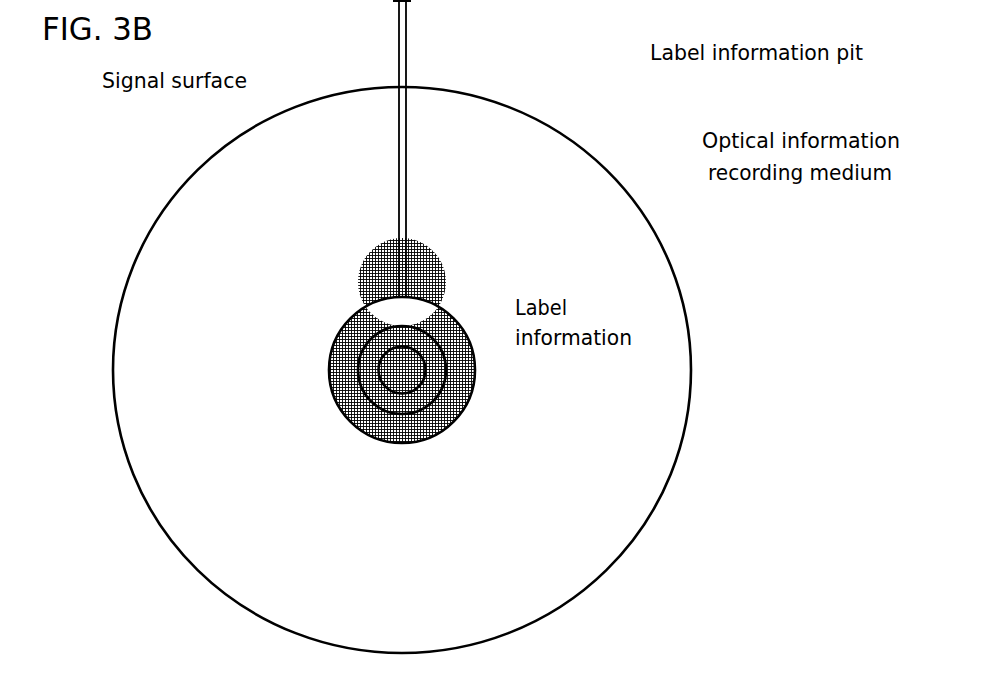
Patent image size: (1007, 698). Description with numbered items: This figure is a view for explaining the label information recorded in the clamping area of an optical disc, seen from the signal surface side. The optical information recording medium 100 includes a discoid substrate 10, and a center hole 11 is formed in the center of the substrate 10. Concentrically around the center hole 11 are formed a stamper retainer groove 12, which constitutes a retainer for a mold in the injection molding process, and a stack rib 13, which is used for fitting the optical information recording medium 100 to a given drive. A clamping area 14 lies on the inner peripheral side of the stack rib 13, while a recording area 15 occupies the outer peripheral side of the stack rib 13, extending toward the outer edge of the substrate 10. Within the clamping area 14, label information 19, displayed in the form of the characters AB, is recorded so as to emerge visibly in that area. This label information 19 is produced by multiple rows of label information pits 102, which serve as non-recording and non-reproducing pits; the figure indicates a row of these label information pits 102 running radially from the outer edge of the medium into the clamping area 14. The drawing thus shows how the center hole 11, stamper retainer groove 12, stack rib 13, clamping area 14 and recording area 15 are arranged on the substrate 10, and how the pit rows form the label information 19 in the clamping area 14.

The substrate 10 is at (598, 581).
The center hole 11 is at (402, 372).
The stamper retainer groove 12 is at (420, 410).
The stack rib 13 is at (462, 403).
The clamping area 14 is at (347, 390).
The recording area 15 is at (223, 217).
The label information 19 is at (423, 313).
The optical information recording medium 100 is at (640, 190).
The label information pits 102 is at (597, 0).